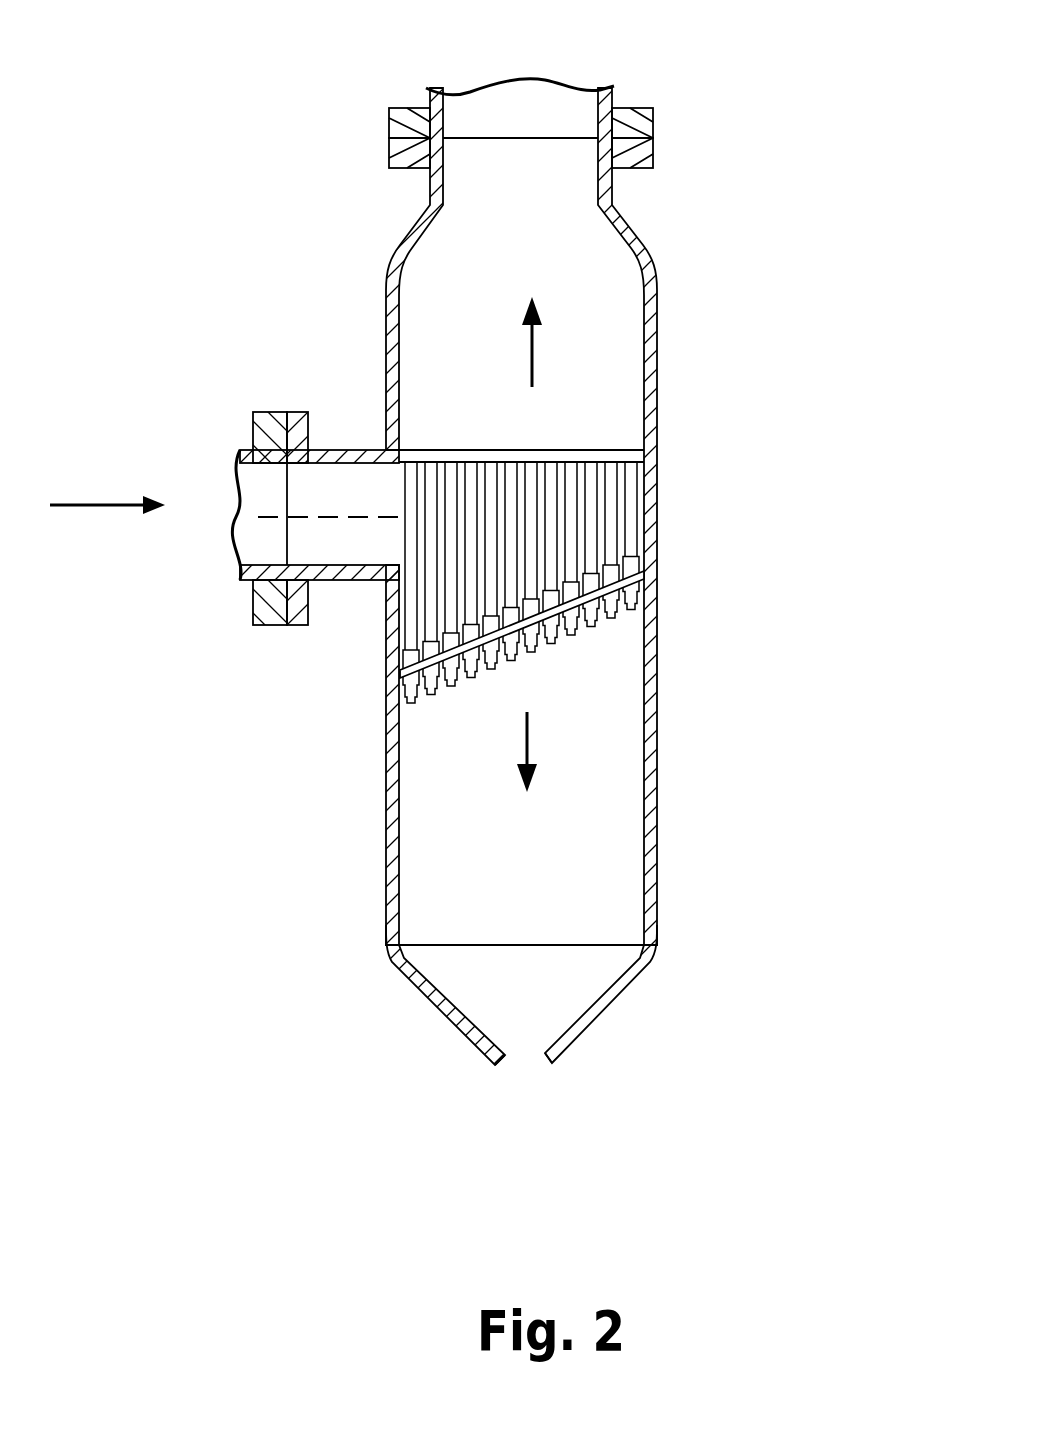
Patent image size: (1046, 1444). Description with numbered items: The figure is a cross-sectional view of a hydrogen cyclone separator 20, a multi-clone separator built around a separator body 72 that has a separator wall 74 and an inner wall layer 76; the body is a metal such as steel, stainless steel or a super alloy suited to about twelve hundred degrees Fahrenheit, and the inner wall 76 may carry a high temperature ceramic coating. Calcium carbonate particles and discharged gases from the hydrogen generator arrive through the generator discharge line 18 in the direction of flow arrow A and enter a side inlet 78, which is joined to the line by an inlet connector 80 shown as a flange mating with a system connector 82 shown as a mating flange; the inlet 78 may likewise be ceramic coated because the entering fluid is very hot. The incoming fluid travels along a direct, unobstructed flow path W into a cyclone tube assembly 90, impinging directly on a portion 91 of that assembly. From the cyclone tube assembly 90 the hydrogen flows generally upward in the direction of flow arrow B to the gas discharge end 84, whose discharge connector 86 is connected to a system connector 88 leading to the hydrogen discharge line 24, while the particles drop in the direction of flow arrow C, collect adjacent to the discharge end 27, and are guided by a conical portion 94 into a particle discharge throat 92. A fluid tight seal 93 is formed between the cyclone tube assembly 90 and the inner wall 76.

The generator discharge line 18 is at (240, 448).
The hydrogen cyclone separator 20 is at (798, 338).
The hydrogen discharge line 24 is at (615, 88).
The discharge end 27 is at (413, 982).
The separator body 72 is at (657, 678).
The separator wall 74 is at (657, 613).
The inner wall layer 76 is at (640, 750).
The inlet 78 is at (360, 525).
The inlet connector 80 is at (302, 413).
The system connector 82 is at (267, 413).
The gas discharge end 84 is at (524, 173).
The discharge connector 86 is at (653, 157).
The system connector 88 is at (653, 117).
The cyclone tube assembly 90 is at (617, 518).
The portion of cyclone tube assembly 91 is at (402, 480).
The particle discharge throat 92 is at (519, 1055).
The fluid tight seal 93 is at (637, 440).
The conical portion 94 is at (475, 1048).
The flow path W is at (300, 517).